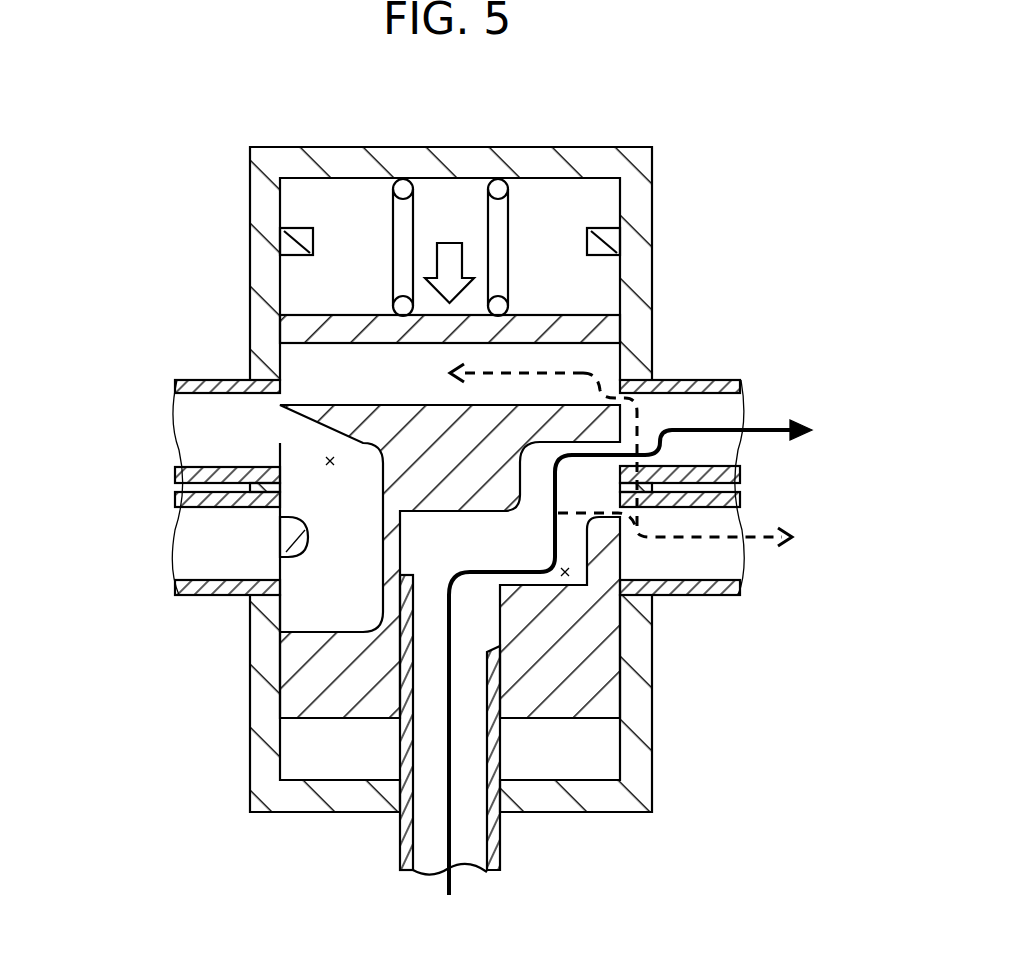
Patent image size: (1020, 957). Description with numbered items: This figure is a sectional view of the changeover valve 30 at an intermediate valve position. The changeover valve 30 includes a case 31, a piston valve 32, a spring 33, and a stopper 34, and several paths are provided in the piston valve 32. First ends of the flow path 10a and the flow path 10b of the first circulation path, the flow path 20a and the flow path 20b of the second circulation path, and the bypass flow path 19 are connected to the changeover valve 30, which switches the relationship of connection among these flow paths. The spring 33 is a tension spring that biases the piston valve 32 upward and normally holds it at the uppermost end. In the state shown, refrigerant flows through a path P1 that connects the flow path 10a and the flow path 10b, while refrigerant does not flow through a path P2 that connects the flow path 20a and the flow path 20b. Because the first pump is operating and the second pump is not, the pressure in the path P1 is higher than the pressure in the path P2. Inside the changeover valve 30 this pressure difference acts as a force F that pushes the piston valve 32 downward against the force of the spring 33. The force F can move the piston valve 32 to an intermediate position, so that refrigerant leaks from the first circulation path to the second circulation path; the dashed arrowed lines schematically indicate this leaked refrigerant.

The changeover valve 30 is at (132, 157).
The case 31 is at (656, 172).
The piston valve 32 is at (582, 315).
The spring 33 is at (393, 268).
The stopper 34 is at (298, 240).
The force F is at (448, 240).
The flow path 20a is at (209, 380).
The flow path 20b is at (196, 597).
The flow path 10a is at (400, 845).
The flow path 10b is at (701, 380).
The bypass flow path 19 is at (692, 597).
The path P1 is at (566, 575).
The path P2 is at (328, 461).